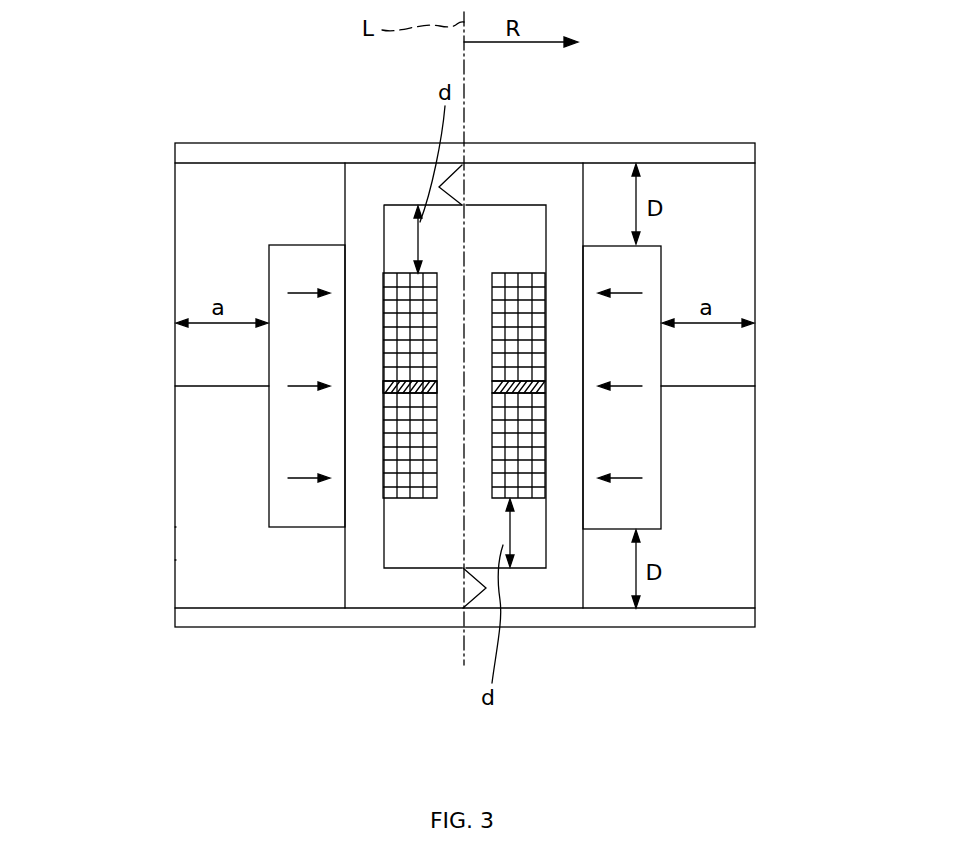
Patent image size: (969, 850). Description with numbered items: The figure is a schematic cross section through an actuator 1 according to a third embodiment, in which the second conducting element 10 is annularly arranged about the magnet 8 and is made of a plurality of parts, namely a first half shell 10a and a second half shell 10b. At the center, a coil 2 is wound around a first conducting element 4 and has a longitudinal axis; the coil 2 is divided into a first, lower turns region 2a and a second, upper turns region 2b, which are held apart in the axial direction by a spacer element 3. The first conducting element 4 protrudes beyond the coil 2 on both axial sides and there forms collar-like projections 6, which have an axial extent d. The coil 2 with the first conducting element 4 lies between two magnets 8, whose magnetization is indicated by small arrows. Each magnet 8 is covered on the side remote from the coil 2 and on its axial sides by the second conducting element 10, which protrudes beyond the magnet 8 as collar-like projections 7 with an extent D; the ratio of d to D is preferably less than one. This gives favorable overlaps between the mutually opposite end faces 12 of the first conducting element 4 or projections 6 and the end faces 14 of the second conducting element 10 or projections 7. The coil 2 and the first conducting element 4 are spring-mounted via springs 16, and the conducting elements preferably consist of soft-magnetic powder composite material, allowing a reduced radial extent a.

The actuator 1 is at (765, 106).
The coil 2 is at (410, 430).
The first turns region 2a is at (540, 455).
The second turns region 2b is at (540, 350).
The spacer element 3 is at (545, 392).
The first conducting element 4 is at (450, 346).
The collar-like projections 6 is at (399, 210).
The collar-like projections 7 is at (255, 178).
The magnet 8 is at (275, 262).
The second conducting element 10 is at (168, 577).
The first half shell 10a is at (187, 203).
The second half shell 10b is at (187, 530).
The end faces 12 is at (384, 237).
The end faces 14 is at (345, 188).
The springs 16 is at (460, 168).